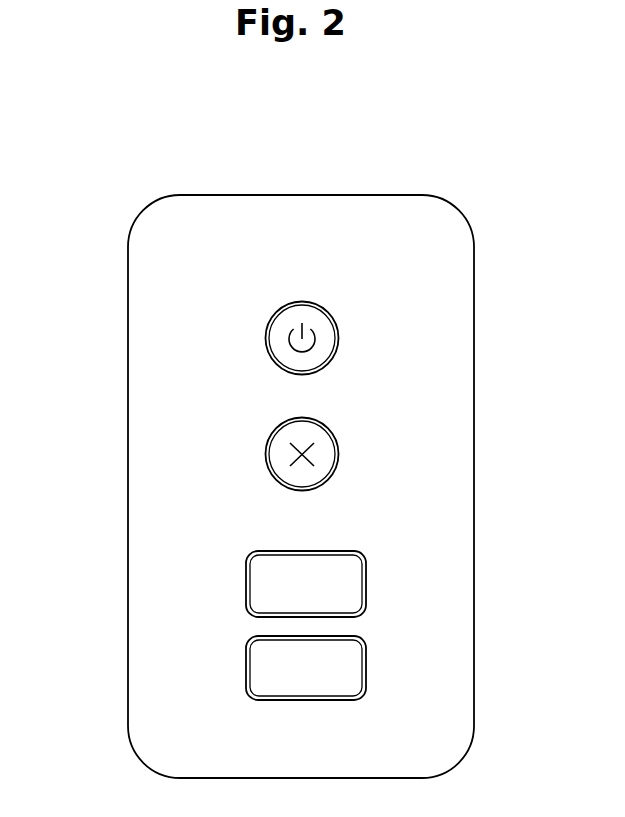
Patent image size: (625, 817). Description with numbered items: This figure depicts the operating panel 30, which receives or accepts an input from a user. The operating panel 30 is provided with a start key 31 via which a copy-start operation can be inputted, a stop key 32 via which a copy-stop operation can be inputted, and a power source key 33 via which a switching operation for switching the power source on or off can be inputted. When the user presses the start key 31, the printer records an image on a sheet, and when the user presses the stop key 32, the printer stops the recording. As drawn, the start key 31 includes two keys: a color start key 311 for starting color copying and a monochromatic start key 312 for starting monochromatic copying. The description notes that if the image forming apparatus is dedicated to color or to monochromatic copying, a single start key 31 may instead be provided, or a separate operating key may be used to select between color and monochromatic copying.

The operating panel 30 is at (399, 195).
The start key 31 is at (234, 611).
The color start key 311 is at (365, 565).
The monochromatic start key 312 is at (365, 673).
The stop key 32 is at (147, 457).
The power source key 33 is at (147, 339).